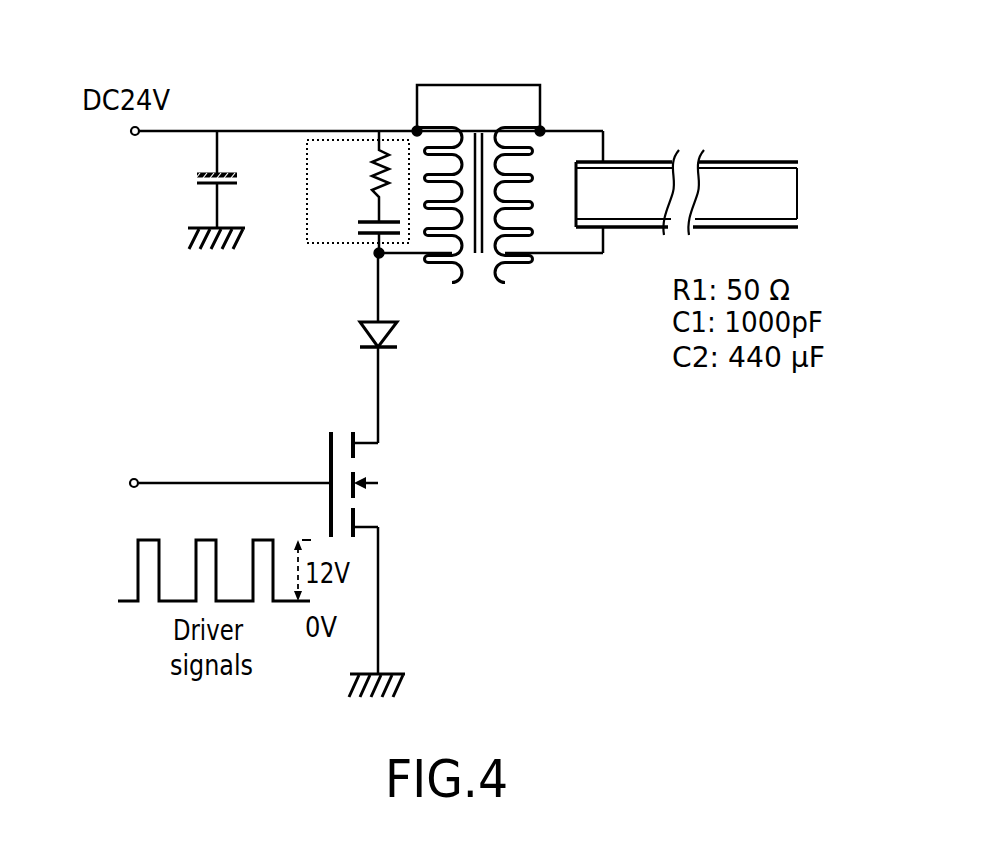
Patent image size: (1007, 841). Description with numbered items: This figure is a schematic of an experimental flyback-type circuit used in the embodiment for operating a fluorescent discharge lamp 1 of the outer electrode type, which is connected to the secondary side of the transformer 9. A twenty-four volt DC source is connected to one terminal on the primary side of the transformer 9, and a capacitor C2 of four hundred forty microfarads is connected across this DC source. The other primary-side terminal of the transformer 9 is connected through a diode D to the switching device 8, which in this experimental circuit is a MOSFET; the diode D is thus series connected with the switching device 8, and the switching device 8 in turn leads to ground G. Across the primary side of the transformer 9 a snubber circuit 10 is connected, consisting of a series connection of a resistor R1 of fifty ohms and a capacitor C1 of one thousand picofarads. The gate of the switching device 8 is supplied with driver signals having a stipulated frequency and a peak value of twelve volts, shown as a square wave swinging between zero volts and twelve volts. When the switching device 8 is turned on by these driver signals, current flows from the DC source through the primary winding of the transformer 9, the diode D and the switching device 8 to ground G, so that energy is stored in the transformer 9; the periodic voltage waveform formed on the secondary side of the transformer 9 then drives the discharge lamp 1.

The fluorescent discharge lamp 1 is at (751, 148).
The switching device 8 is at (400, 450).
The transformer 9 is at (458, 104).
The snubber circuit 10 is at (343, 221).
The diode D is at (411, 333).
The ground G is at (387, 692).
The resistor R1 is at (371, 164).
The capacitor C1 is at (358, 227).
The capacitor C2 is at (200, 176).